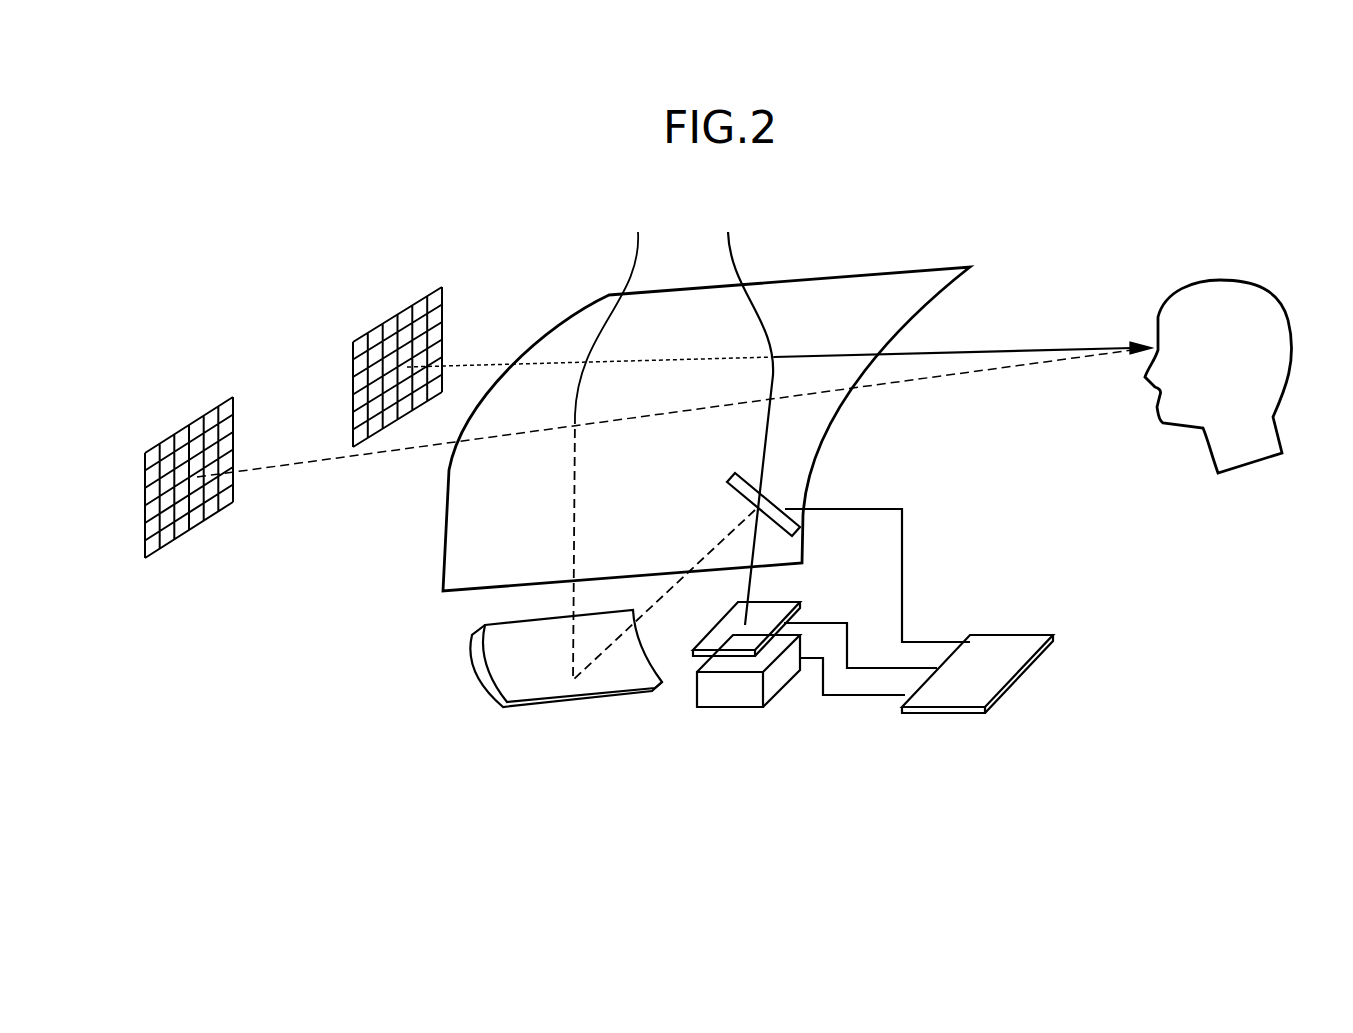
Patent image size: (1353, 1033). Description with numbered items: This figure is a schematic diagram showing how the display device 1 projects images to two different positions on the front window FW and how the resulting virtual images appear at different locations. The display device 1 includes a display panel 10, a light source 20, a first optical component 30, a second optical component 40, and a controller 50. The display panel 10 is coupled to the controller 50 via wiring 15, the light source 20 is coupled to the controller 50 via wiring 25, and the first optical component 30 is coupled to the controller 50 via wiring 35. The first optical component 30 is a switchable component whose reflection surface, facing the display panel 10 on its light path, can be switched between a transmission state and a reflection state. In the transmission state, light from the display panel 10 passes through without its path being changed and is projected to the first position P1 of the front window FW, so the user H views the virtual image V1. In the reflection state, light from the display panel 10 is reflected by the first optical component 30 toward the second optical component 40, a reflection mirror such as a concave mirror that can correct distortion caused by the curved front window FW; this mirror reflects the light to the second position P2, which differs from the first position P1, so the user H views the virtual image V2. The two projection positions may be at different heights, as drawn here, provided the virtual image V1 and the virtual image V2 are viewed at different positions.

The display device 1 is at (540, 234).
The display panel 10 is at (690, 648).
The wiring 15 is at (877, 668).
The light source 20 is at (717, 708).
The wiring 25 is at (837, 695).
The first optical component 30 is at (727, 478).
The wiring 35 is at (902, 547).
The second optical component 40 is at (522, 708).
The controller 50 is at (922, 715).
The front window FW is at (919, 267).
The first position P1 is at (744, 416).
The second position P2 is at (612, 444).
The user H is at (1250, 280).
The virtual image V1 is at (420, 297).
The virtual image V2 is at (210, 407).